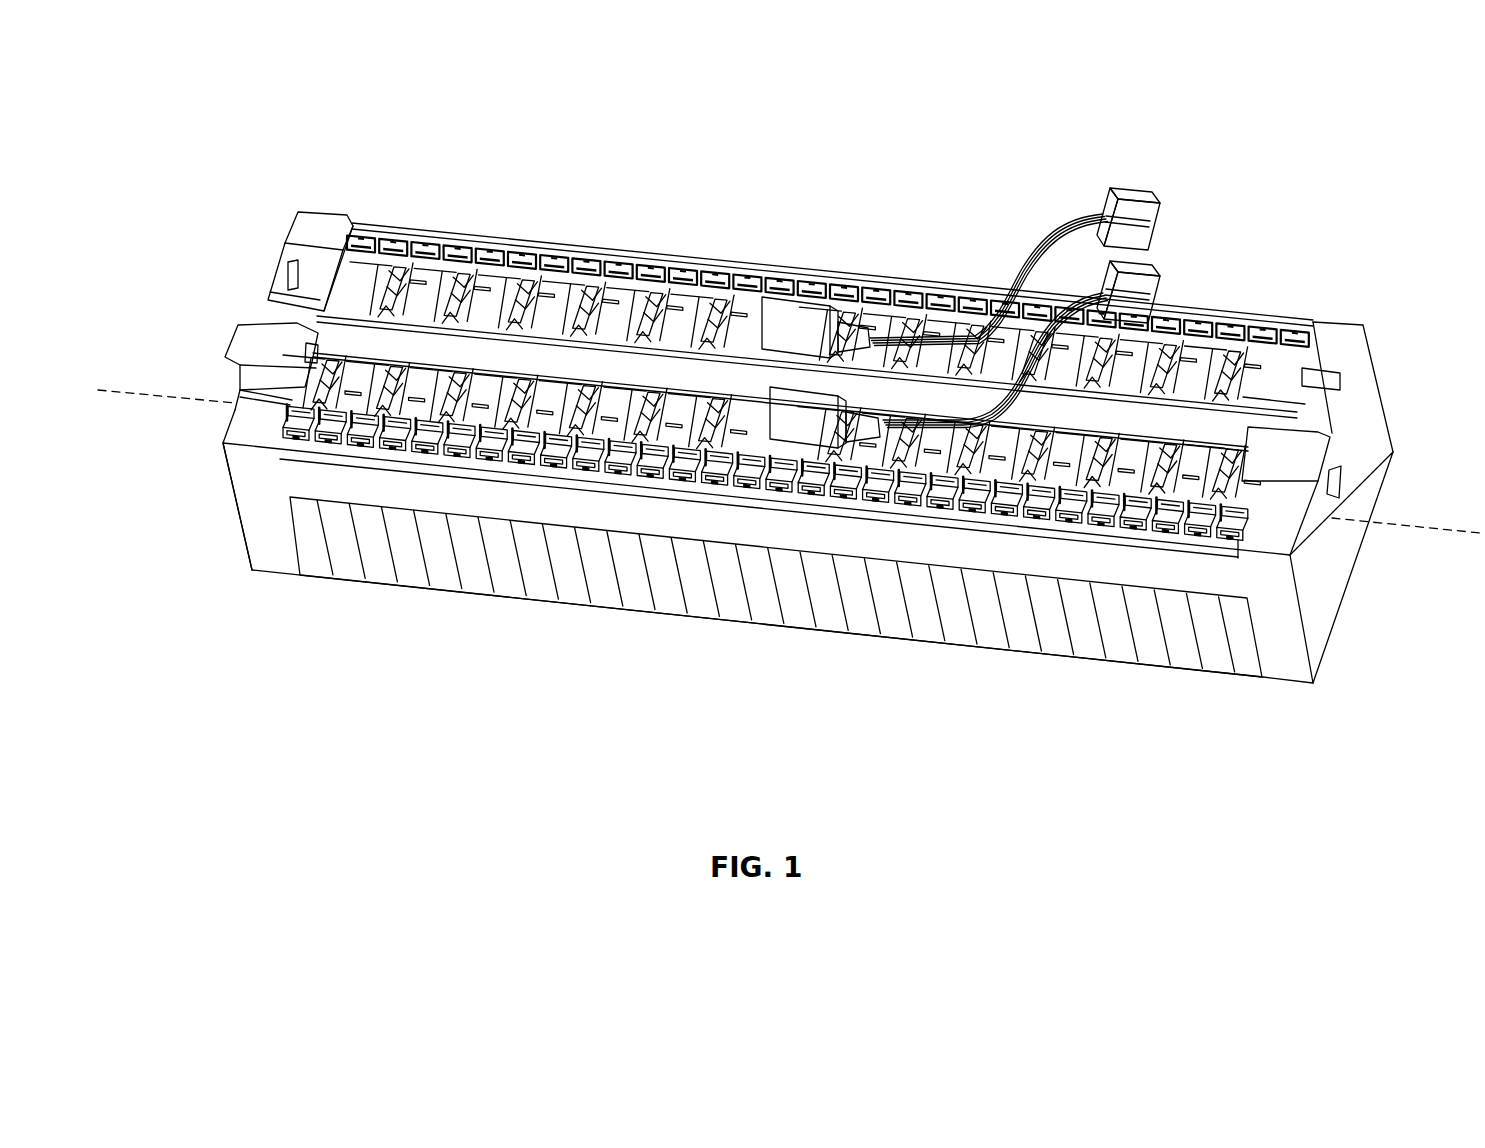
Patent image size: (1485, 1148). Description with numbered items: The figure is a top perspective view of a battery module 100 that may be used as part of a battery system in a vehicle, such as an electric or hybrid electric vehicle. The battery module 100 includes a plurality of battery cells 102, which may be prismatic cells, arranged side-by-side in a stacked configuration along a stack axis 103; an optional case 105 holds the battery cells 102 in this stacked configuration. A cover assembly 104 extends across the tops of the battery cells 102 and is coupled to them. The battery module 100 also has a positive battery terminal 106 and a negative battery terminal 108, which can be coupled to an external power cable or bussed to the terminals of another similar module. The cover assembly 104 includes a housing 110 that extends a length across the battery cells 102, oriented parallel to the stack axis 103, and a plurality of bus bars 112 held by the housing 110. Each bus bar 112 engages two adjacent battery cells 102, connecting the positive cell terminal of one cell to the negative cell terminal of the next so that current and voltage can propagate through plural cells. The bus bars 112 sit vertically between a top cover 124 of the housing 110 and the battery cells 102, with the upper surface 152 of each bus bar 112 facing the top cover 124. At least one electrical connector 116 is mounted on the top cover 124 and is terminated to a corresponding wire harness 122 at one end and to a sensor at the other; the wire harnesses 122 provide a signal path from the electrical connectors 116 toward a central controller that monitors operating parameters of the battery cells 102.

The battery module 100 is at (1040, 160).
The battery cells 102 is at (708, 603).
The stack axis 103 is at (1398, 527).
The cover assembly 104 is at (385, 225).
The case 105 is at (258, 490).
The positive battery terminal 106 is at (1292, 447).
The negative battery terminal 108 is at (252, 335).
The housing 110 is at (580, 385).
The bus bars 112 is at (392, 432).
The electrical connector 116 is at (820, 408).
The wire harnesses 122 is at (960, 418).
The top cover 124 is at (405, 413).
The upper surface 152 is at (400, 447).